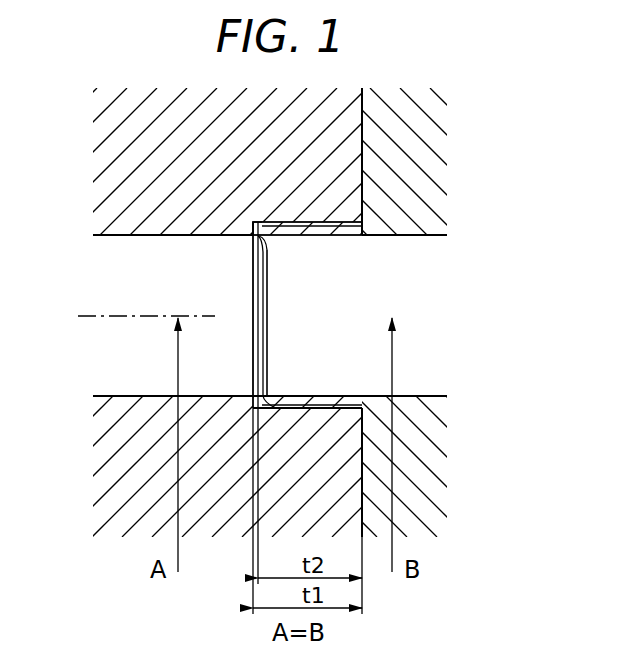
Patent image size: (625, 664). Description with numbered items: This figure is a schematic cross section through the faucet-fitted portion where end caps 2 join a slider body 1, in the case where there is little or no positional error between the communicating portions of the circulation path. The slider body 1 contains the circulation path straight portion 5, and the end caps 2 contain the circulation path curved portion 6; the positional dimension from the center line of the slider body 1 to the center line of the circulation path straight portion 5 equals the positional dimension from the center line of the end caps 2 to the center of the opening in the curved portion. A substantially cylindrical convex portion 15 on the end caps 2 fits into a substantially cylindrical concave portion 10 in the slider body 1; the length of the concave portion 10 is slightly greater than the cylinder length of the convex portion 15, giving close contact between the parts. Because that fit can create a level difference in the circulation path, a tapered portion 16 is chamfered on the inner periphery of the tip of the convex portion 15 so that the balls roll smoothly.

The slider body 1 is at (105, 482).
The end caps 2 is at (440, 143).
The circulation path straight portion 5 is at (147, 352).
The circulation path curved portion 6 is at (412, 352).
The substantially cylindrical concave portion 10 is at (285, 222).
The substantially cylindrical convex portion 15 is at (327, 238).
The tapered portion 16 is at (265, 250).